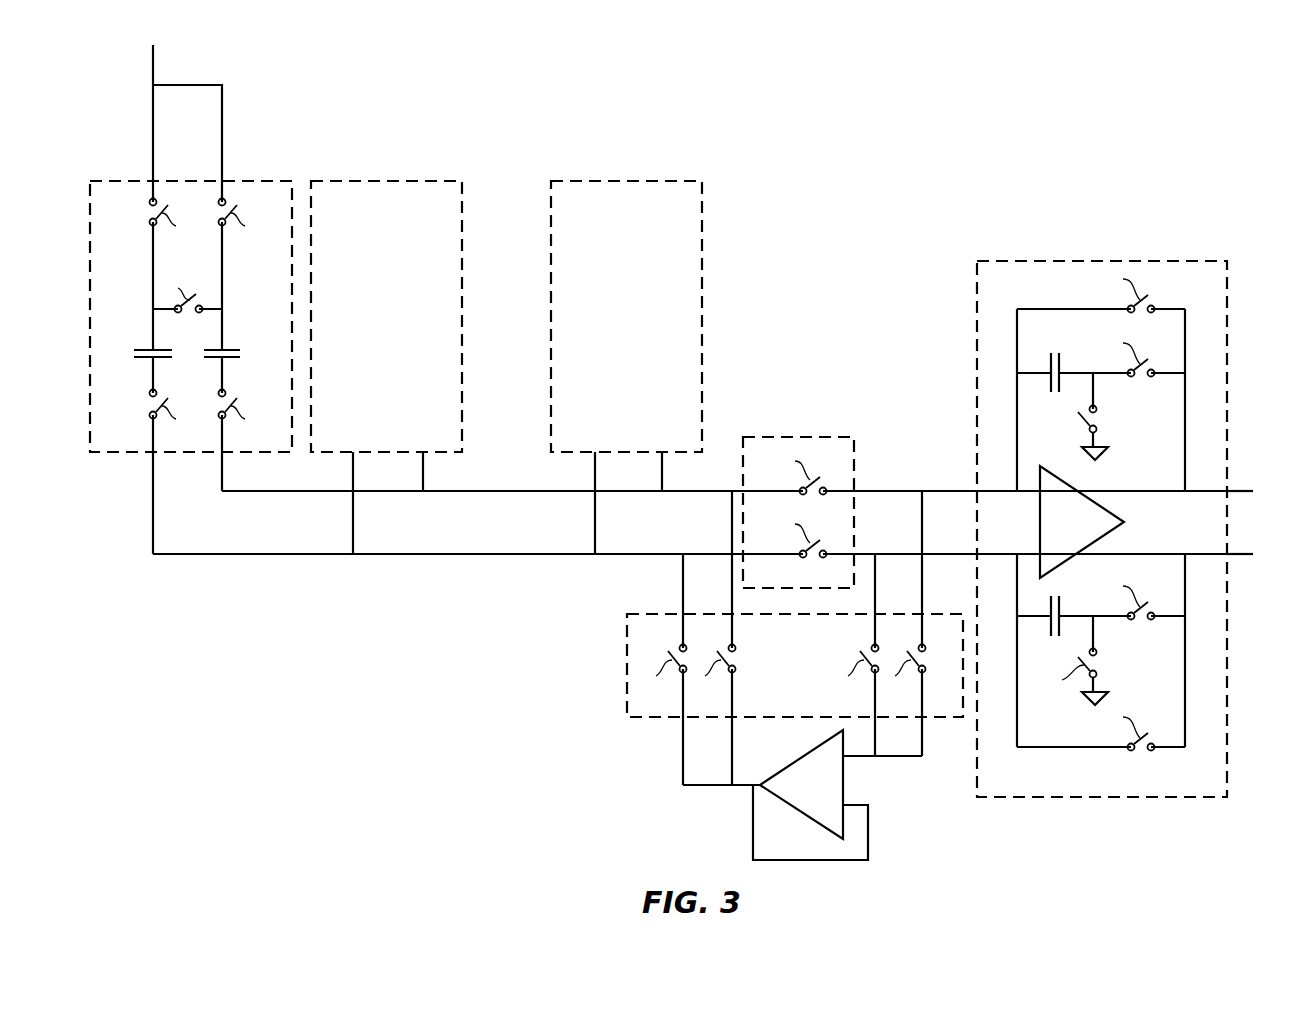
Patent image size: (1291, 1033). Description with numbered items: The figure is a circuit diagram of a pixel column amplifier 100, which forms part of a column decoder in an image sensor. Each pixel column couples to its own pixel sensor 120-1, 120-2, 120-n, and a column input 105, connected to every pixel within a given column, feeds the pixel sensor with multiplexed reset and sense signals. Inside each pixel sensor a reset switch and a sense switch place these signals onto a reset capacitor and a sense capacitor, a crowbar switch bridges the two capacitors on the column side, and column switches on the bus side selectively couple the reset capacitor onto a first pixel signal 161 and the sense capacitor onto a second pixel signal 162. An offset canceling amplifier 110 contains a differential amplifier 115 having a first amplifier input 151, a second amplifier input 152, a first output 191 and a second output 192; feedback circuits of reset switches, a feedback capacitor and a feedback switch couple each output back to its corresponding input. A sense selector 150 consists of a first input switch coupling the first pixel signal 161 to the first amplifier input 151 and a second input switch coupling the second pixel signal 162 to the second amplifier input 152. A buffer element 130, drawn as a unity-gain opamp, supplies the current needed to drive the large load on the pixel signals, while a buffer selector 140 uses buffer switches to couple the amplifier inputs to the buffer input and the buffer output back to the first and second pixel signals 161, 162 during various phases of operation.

The pixel column amplifier 100 is at (868, 124).
The column input 105 is at (153, 65).
The offset canceling amplifier 110 is at (1102, 498).
The differential amplifier 115 is at (1108, 508).
The pixel sensor 120-1 is at (255, 181).
The pixel sensor 120-2 is at (438, 181).
The pixel sensor 120-n is at (678, 181).
The buffer element 130 is at (843, 775).
The buffer selector 140 is at (627, 665).
The sense selector 150 is at (783, 437).
The first amplifier input 151 is at (905, 491).
The second amplifier input 152 is at (905, 554).
The first pixel signal 161 is at (531, 491).
The second pixel signal 162 is at (531, 554).
The first output 191 is at (1240, 491).
The second output 192 is at (1242, 554).